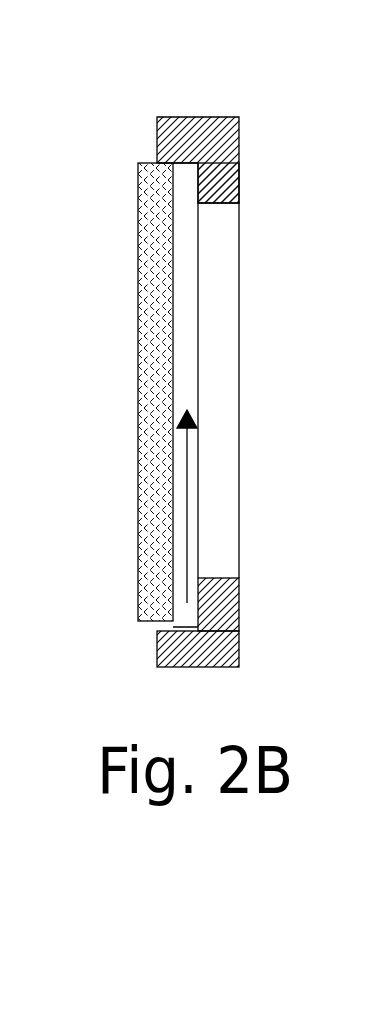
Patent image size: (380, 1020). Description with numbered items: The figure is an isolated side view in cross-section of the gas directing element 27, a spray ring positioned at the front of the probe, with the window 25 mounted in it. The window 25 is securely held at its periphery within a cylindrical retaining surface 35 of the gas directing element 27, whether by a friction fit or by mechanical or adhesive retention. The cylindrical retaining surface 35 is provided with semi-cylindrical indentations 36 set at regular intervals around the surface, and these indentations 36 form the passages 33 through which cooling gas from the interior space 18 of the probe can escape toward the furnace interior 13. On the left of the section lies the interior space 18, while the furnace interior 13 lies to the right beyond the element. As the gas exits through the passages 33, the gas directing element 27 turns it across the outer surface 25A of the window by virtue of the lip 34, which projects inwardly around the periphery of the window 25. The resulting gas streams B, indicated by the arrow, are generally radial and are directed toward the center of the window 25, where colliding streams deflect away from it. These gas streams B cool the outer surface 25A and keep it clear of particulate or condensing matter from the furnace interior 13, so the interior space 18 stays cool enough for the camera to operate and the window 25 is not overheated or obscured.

The furnace interior 13 is at (322, 401).
The interior space 18 is at (71, 401).
The window 25 is at (140, 291).
The outer surface of window 25A is at (173, 323).
The gas directing element 27 is at (212, 121).
The passages 33 is at (188, 627).
The lip 34 is at (228, 182).
The cylindrical retaining surface 35 is at (185, 168).
The semi-cylindrical indentations 36 is at (148, 627).
The gas streams B is at (187, 523).